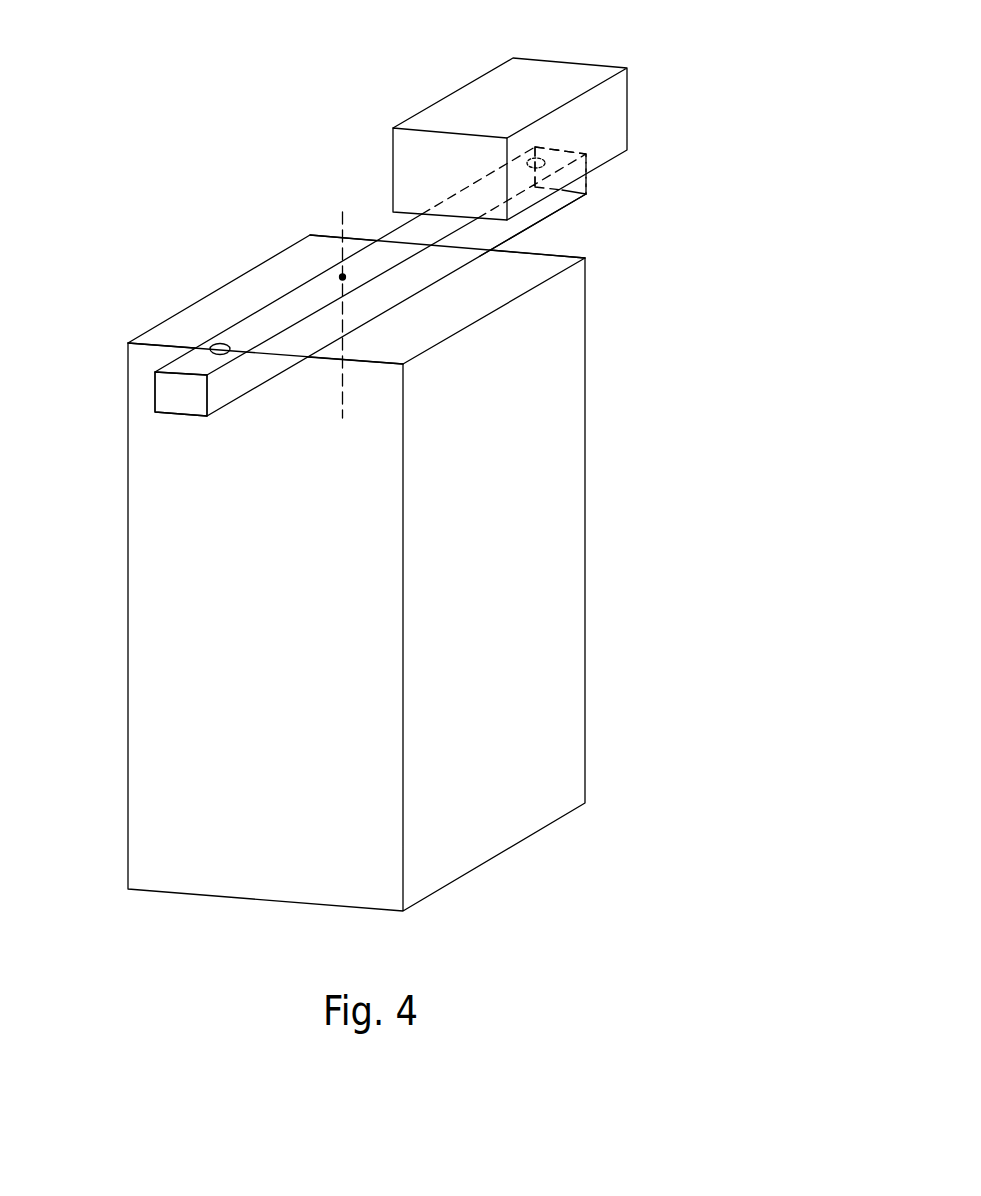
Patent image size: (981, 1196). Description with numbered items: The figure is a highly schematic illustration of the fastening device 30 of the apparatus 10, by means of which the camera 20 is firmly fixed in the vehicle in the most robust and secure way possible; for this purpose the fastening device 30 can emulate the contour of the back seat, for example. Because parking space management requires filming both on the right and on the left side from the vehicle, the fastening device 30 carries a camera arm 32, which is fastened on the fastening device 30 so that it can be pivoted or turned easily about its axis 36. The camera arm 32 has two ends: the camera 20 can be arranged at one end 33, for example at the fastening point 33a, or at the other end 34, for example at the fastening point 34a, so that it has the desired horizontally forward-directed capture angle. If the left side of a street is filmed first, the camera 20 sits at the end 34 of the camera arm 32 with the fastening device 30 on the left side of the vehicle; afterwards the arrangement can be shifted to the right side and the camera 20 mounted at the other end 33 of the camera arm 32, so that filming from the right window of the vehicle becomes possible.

The apparatus 10 is at (363, 92).
The camera 20 is at (545, 70).
The fastening device 30 is at (553, 408).
The camera arm 32 is at (292, 290).
The end of the camera arm 33 is at (170, 392).
The fastening point 33a is at (217, 346).
The end of the camera arm 34 is at (498, 230).
The fastening point 34a is at (543, 162).
The axis 36 is at (342, 212).